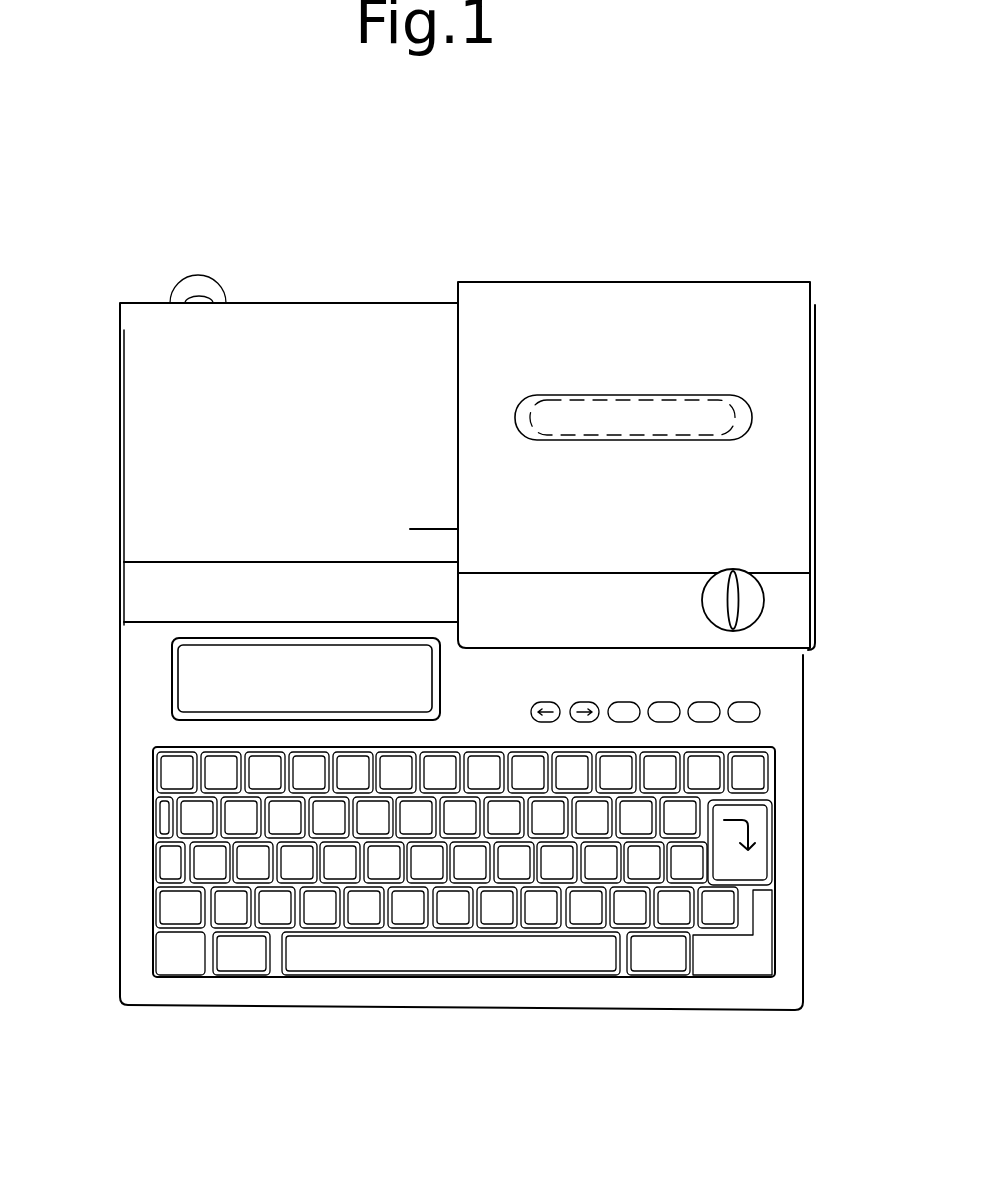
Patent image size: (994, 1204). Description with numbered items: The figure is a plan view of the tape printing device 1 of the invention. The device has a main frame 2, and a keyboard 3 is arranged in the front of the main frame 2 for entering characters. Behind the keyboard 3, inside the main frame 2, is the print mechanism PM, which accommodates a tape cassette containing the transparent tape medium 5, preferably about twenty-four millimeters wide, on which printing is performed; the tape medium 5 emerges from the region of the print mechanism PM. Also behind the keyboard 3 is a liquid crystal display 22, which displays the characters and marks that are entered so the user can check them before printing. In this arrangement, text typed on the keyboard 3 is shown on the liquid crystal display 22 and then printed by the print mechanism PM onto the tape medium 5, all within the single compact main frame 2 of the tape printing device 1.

The tape printing device 1 is at (852, 320).
The print mechanism PM is at (505, 318).
The main frame 2 is at (815, 455).
The tape medium 5 is at (430, 528).
The liquid crystal display 22 is at (187, 668).
The keyboard 3 is at (330, 978).